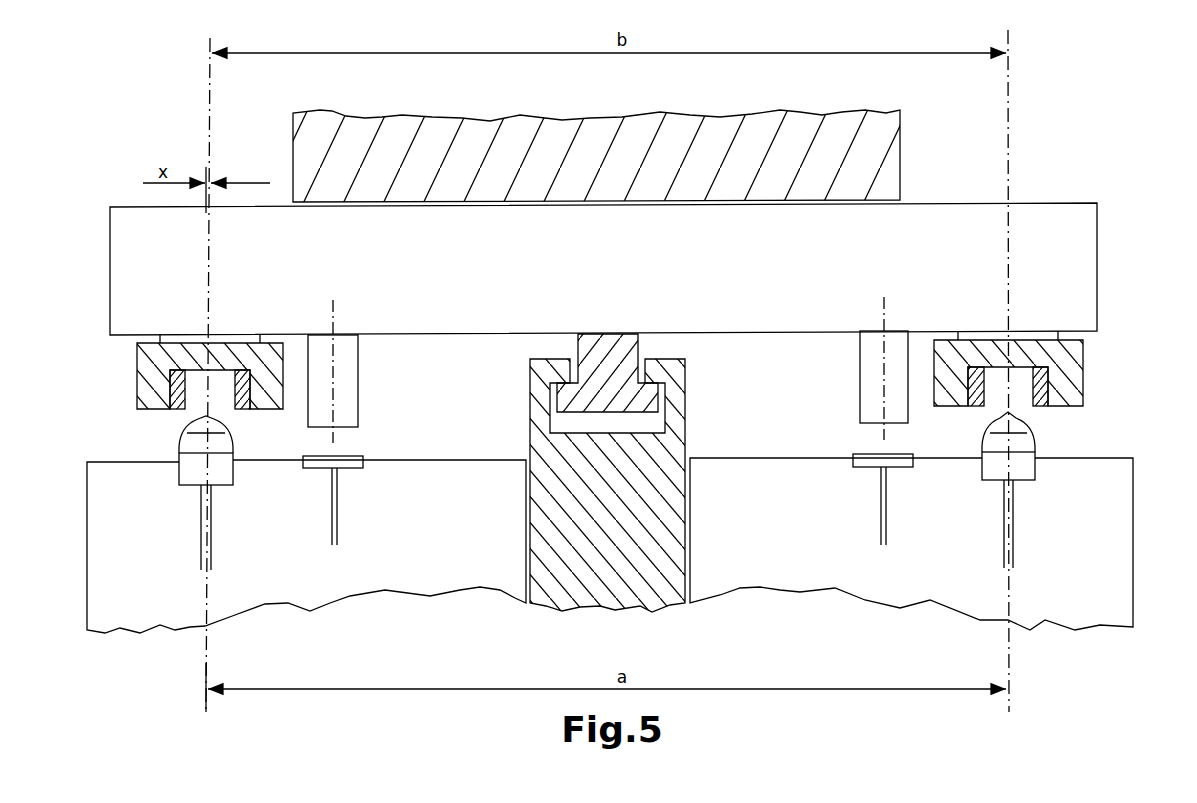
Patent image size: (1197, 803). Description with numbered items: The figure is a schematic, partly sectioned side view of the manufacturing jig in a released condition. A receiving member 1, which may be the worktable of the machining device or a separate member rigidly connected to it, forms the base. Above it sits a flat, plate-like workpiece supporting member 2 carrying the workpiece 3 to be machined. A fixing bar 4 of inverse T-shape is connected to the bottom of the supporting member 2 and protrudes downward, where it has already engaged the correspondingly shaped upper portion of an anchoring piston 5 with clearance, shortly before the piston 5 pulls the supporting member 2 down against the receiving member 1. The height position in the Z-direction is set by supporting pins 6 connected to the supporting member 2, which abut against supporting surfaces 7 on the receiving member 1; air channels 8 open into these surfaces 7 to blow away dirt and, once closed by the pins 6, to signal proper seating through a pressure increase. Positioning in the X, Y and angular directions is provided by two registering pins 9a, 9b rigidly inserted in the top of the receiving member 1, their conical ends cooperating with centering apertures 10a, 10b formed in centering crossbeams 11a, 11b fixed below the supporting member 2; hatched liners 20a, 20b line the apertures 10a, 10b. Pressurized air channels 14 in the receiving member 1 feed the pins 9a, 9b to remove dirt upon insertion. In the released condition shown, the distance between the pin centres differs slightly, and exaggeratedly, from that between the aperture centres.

The receiving member 1 is at (122, 560).
The workpiece supporting member 2 is at (133, 257).
The workpiece 3 is at (325, 145).
The fixing bar 4 is at (627, 350).
The anchoring piston 5 is at (627, 515).
The supporting pin 6 is at (343, 378).
The supporting surface 7 is at (355, 455).
The air channel 8 is at (338, 515).
The registering pin 9a is at (222, 472).
The registering pin 9b is at (1020, 468).
The centering aperture 10a is at (200, 386).
The centering aperture 10b is at (1020, 385).
The centering crossbeam 11a is at (150, 390).
The centering crossbeam 11b is at (1073, 390).
The pressurized air channel 14 is at (212, 548).
The left bore liner 20a is at (175, 410).
The right bore liner 20b is at (1040, 403).